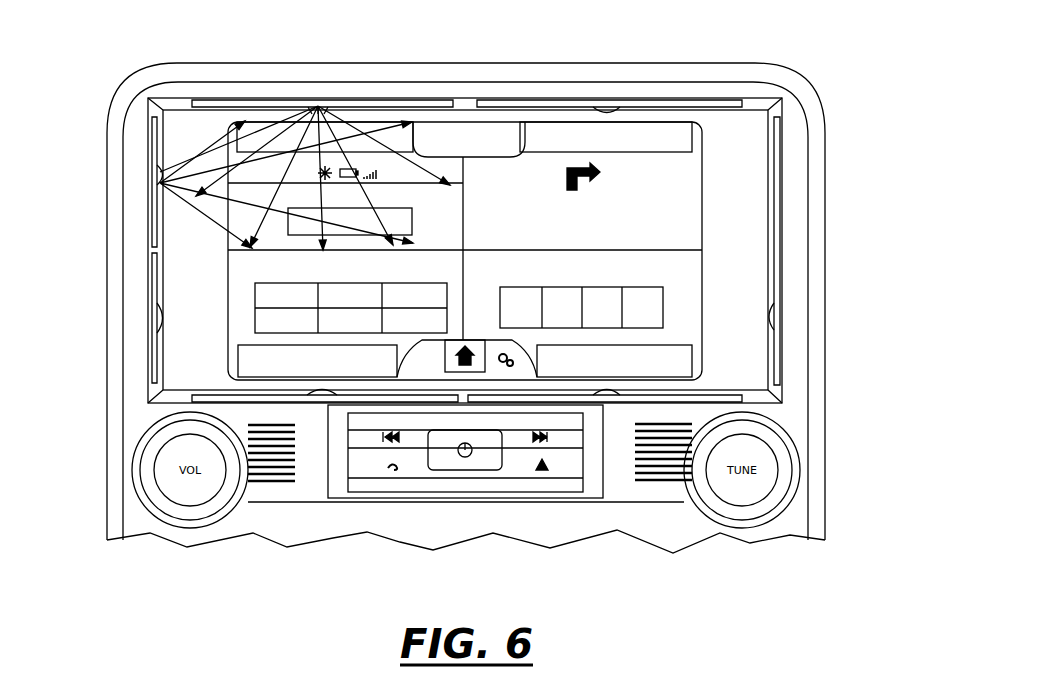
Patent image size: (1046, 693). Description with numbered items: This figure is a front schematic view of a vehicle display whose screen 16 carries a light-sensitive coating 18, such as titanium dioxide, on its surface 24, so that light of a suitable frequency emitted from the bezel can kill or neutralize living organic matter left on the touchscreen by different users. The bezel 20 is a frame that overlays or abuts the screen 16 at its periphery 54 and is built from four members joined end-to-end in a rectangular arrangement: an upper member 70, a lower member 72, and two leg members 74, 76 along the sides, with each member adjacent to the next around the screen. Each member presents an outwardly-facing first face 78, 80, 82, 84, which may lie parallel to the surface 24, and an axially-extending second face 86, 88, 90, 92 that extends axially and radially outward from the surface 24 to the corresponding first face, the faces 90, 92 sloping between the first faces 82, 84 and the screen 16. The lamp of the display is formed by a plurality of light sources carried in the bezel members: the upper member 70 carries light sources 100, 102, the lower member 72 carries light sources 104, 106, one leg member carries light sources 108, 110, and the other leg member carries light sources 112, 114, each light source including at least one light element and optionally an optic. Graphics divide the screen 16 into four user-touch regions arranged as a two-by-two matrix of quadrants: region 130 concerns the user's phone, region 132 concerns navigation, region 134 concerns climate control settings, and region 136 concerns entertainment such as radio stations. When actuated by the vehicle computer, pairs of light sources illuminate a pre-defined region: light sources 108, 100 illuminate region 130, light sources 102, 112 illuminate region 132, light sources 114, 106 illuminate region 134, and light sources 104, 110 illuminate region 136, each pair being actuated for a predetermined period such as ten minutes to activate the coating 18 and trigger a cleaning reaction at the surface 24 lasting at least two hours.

The screen 16 is at (747, 133).
The light-sensitive coating 18 is at (715, 137).
The bezel 20 is at (188, 95).
The surface 24 is at (745, 172).
The periphery 54 is at (760, 136).
The upper member 70 is at (460, 105).
The lower member 72 is at (468, 397).
The leg member 74 is at (155, 250).
The leg member 76 is at (777, 253).
The outwardly-facing face 78 is at (428, 90).
The outwardly-facing face 80 is at (307, 433).
The outwardly-facing face 82 is at (137, 300).
The outwardly-facing face 84 is at (792, 300).
The axially-extending face 86 is at (472, 105).
The axially-extending face 88 is at (460, 397).
The axially-extending face 90 is at (153, 388).
The axially-extending face 92 is at (777, 390).
The light source 100 is at (318, 106).
The light source 102 is at (607, 105).
The light source 104 is at (322, 400).
The light source 106 is at (607, 400).
The light source 108 is at (160, 183).
The light source 110 is at (157, 320).
The light source 112 is at (778, 180).
The light source 114 is at (778, 318).
The user-touch region 130 is at (240, 220).
The user-touch region 132 is at (673, 212).
The user-touch region 134 is at (680, 302).
The user-touch region 136 is at (243, 315).